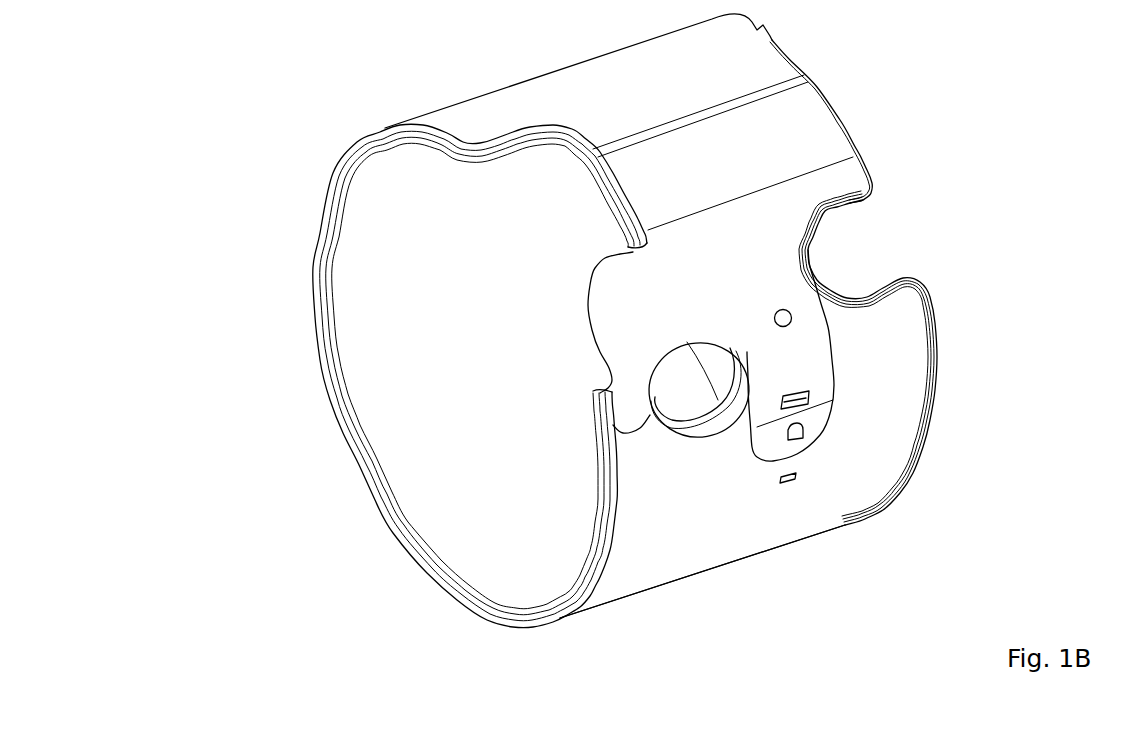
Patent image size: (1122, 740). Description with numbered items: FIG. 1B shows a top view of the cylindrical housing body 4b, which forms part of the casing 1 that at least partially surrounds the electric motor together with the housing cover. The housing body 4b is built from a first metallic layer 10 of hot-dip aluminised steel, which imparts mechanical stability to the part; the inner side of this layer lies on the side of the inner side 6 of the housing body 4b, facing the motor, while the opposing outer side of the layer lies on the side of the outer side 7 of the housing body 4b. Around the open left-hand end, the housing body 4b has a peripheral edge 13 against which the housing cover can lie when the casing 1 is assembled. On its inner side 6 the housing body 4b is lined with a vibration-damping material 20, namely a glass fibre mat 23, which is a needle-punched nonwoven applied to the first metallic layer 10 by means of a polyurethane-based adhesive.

The casing 1 is at (675, 497).
The inner side 6 is at (512, 366).
The outer side 7 is at (652, 560).
The first metallic layer 10 is at (815, 508).
The peripheral edge 13 is at (453, 597).
The vibration-damping material 20 is at (552, 612).
The glass fibre mat 23 is at (552, 612).
The housing body 4b is at (870, 486).